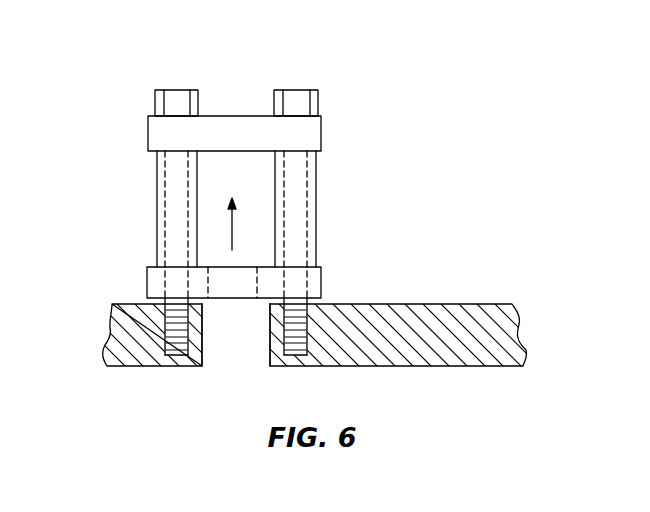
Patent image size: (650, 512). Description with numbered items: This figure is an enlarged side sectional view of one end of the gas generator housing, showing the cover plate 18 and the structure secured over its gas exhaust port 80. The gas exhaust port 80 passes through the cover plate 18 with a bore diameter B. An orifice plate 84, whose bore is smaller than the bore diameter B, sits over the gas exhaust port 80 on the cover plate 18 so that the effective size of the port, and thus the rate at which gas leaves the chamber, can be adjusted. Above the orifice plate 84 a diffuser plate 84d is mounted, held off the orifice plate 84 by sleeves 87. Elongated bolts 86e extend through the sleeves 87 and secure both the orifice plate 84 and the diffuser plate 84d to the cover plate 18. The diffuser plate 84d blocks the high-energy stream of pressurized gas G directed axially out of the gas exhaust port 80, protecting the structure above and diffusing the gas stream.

The gas exhaust port 80 is at (237, 192).
The diffuser plate 84d is at (162, 132).
The orifice plate 84 is at (315, 282).
The elongated bolts 86e is at (313, 102).
The sleeves 87 is at (313, 205).
The cover plate 18 is at (470, 318).
The bore diameter B is at (237, 347).
The pressurized gas G is at (232, 213).